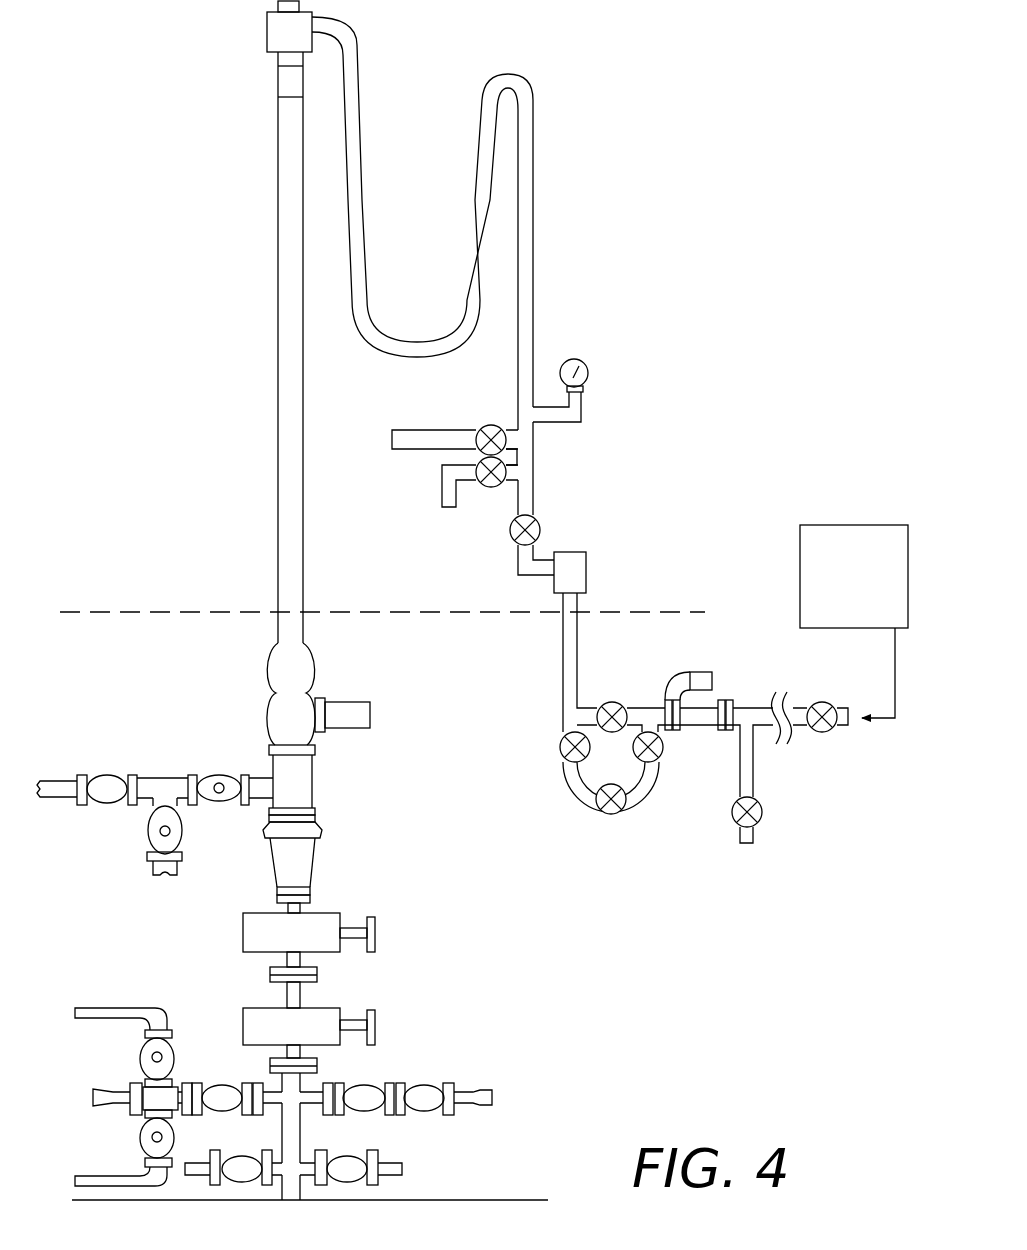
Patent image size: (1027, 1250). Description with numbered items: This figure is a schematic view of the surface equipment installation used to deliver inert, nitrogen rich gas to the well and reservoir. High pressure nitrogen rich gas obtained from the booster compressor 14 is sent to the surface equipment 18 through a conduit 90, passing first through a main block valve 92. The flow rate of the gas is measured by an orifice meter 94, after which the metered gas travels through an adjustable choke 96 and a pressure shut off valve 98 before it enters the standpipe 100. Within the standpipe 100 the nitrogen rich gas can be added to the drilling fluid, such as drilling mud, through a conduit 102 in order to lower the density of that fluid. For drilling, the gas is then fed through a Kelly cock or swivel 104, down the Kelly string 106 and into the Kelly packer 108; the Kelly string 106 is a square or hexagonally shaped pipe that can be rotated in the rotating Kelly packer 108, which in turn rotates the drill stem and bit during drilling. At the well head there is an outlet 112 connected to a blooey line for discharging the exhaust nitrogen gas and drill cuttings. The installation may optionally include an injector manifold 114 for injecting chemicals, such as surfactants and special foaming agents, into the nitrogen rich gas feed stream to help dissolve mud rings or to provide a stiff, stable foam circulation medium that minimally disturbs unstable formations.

The booster compressor 14 is at (836, 520).
The surface equipment 18 is at (617, 297).
The conduit 90 is at (893, 656).
The main block valve 92 is at (823, 699).
The orifice meter 94 is at (692, 670).
The adjustable choke 96 is at (590, 548).
The pressure shut off valve 98 is at (549, 527).
The standpipe 100 is at (536, 172).
The conduit 102 is at (438, 472).
The Kelly cock or swivel 104 is at (288, 78).
The Kelly string 106 is at (295, 300).
The Kelly packer 108 is at (320, 655).
The outlet 112 is at (352, 722).
The injector manifold 114 is at (605, 678).